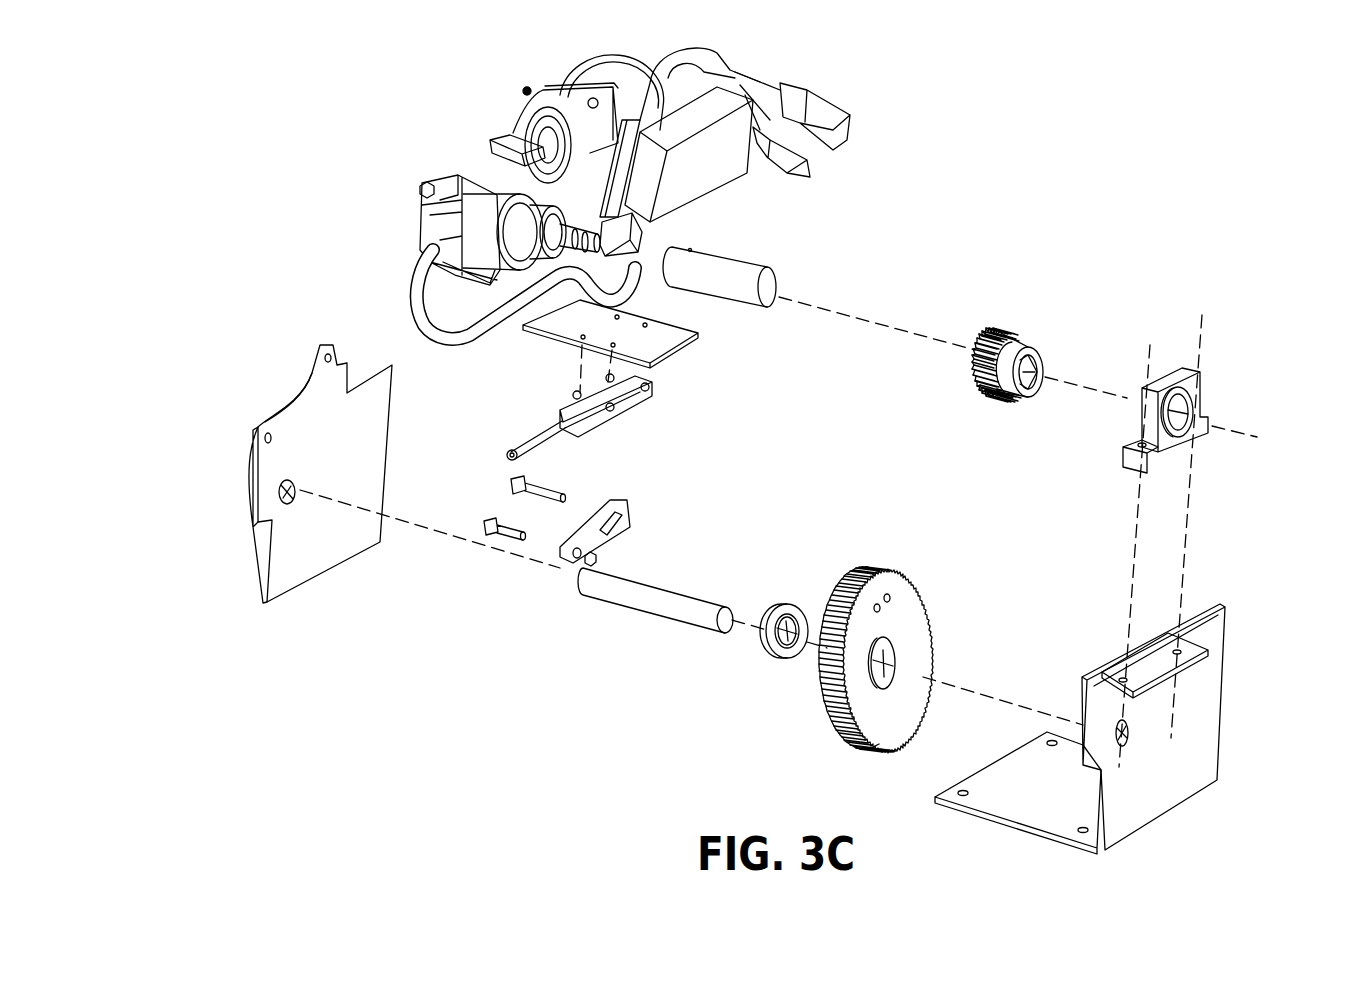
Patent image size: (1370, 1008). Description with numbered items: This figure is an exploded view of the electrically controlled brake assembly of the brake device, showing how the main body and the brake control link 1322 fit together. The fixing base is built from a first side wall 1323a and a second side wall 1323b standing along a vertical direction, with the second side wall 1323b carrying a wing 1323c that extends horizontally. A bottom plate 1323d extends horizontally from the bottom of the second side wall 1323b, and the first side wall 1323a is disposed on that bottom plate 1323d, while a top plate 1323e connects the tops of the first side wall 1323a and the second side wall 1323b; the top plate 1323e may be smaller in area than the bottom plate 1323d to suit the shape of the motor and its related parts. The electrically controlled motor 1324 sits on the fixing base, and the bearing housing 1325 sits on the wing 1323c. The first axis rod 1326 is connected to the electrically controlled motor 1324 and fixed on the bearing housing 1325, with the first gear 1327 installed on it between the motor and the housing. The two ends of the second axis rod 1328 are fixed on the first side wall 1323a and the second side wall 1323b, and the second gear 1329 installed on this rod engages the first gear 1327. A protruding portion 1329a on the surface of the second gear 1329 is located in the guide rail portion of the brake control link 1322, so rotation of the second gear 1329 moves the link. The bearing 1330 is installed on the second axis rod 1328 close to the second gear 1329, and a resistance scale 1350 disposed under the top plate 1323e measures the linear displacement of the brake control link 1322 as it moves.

The brake control link 1322 is at (547, 560).
The first side wall 1323a is at (320, 418).
The second side wall 1323b is at (1200, 723).
The wing 1323c is at (1197, 650).
The bottom plate 1323d is at (1033, 803).
The top plate 1323e is at (667, 340).
The electrically controlled motor 1324 is at (510, 145).
The bearing housing 1325 is at (1197, 387).
The first axis rod 1326 is at (740, 275).
The first gear 1327 is at (1056, 326).
The second axis rod 1328 is at (675, 607).
The second gear 1329 is at (917, 605).
The protruding portion 1329a is at (547, 495).
The bearing 1330 is at (772, 648).
The resistance scale 1350 is at (553, 417).